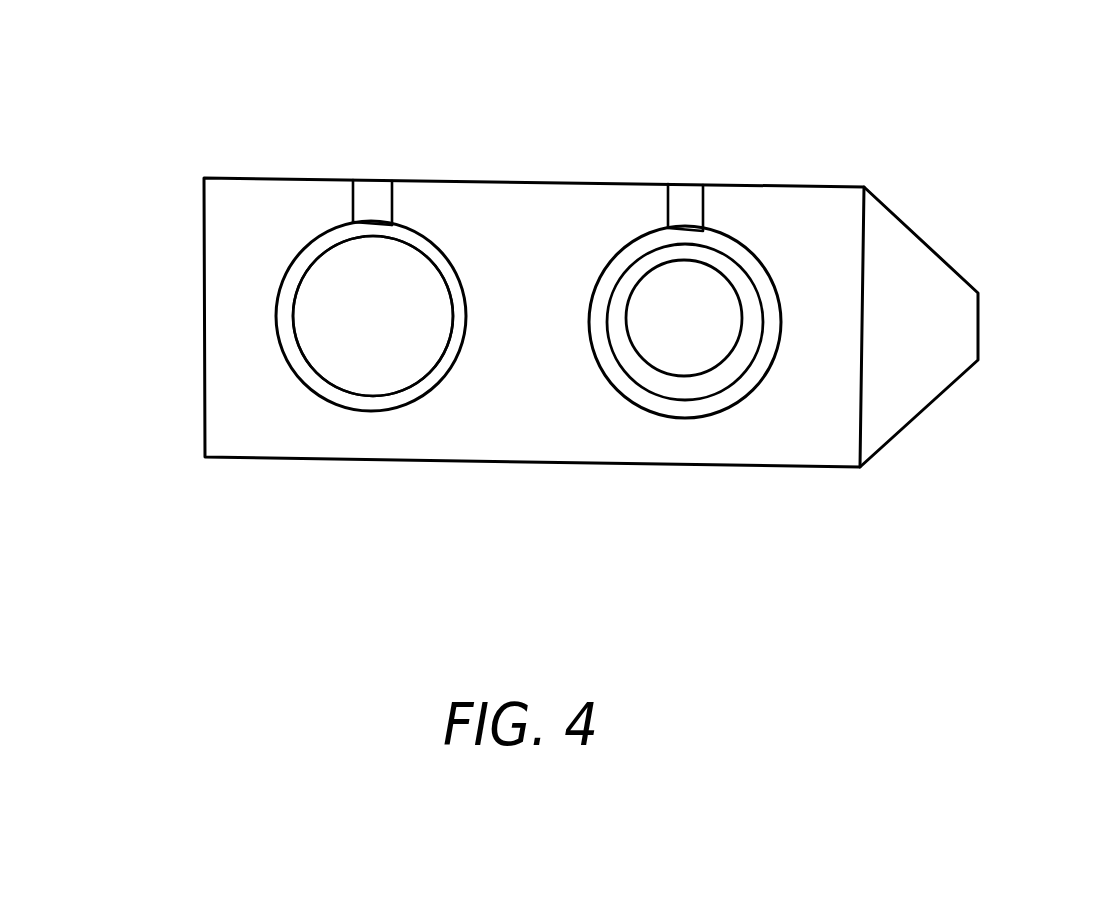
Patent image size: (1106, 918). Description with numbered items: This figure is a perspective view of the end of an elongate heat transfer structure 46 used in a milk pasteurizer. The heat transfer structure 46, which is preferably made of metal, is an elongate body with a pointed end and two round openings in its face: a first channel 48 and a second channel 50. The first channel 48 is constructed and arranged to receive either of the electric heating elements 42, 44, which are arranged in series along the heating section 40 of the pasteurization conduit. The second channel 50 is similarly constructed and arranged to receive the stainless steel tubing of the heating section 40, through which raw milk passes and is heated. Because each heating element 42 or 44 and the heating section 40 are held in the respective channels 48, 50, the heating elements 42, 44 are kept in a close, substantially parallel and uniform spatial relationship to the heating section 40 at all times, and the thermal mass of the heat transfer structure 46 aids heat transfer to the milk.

The heating section 40 is at (657, 388).
The heating element 42 is at (408, 388).
The heating element 44 is at (373, 316).
The elongate heat transfer structure 46 is at (908, 227).
The first channel 48 is at (423, 243).
The second channel 50 is at (745, 247).